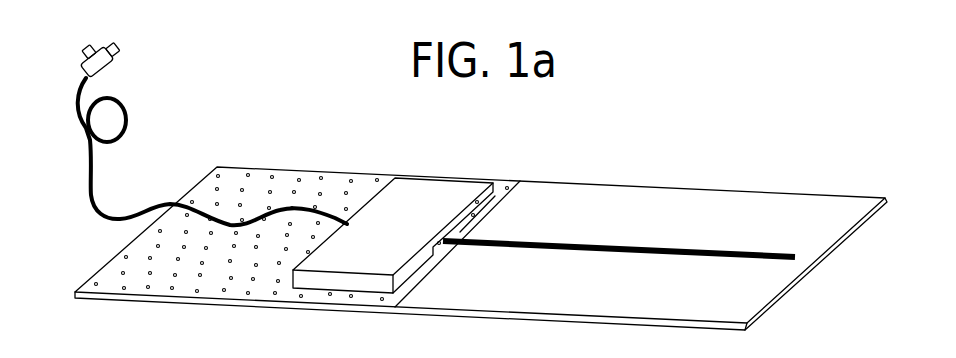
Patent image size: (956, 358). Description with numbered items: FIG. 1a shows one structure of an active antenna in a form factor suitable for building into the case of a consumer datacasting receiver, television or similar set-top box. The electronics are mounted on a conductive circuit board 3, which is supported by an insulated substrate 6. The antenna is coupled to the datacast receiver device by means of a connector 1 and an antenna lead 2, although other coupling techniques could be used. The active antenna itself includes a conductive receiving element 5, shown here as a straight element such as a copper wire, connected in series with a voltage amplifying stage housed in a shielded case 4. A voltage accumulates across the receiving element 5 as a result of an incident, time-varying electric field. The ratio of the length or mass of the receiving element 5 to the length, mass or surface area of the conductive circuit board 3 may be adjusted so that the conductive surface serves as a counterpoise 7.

The connector 1 is at (87, 58).
The antenna lead 2 is at (133, 128).
The conductive circuit board 3 is at (289, 168).
The shielded case 4 is at (438, 198).
The conductive receiving element 5 is at (589, 238).
The insulated substrate 6 is at (750, 208).
The counterpoise 7 is at (330, 170).